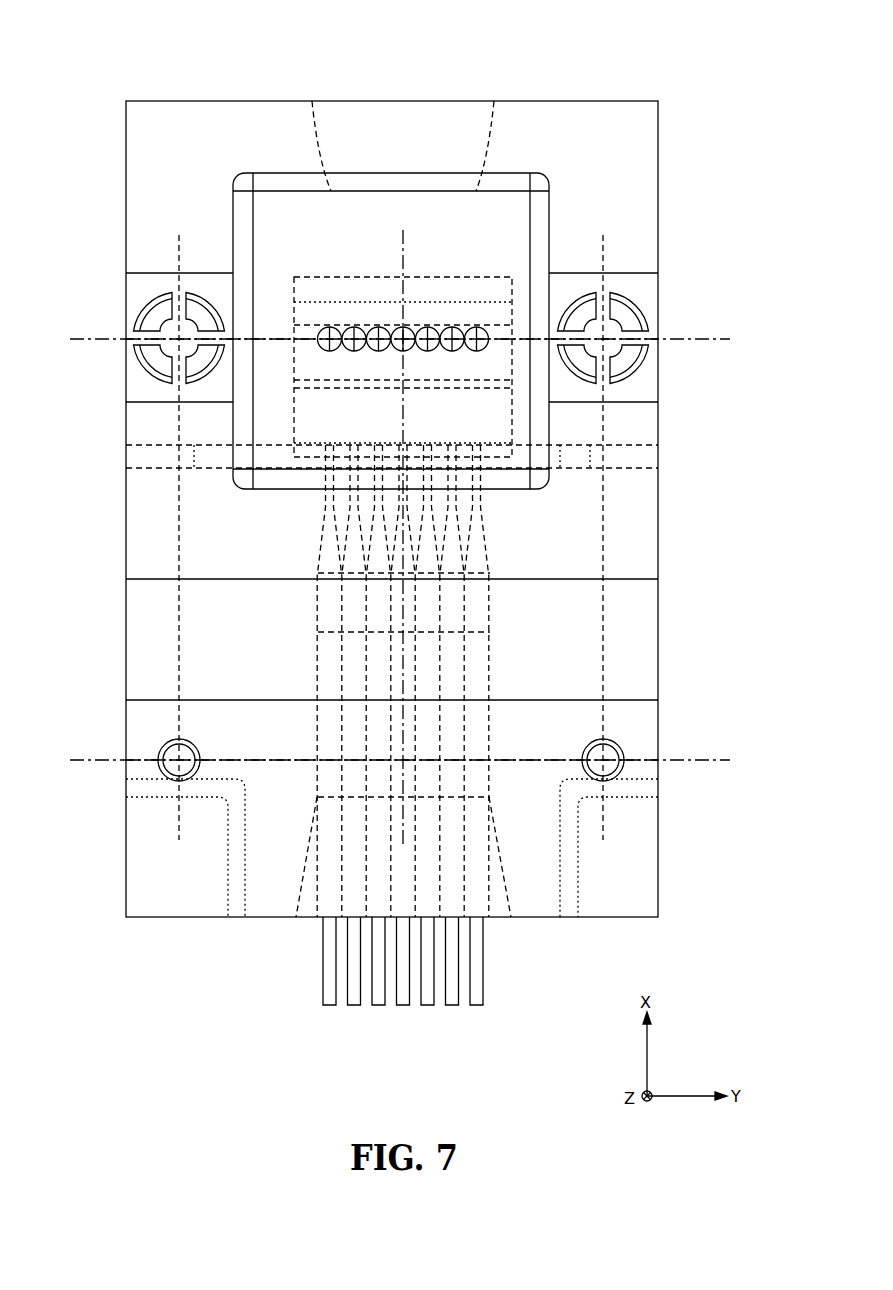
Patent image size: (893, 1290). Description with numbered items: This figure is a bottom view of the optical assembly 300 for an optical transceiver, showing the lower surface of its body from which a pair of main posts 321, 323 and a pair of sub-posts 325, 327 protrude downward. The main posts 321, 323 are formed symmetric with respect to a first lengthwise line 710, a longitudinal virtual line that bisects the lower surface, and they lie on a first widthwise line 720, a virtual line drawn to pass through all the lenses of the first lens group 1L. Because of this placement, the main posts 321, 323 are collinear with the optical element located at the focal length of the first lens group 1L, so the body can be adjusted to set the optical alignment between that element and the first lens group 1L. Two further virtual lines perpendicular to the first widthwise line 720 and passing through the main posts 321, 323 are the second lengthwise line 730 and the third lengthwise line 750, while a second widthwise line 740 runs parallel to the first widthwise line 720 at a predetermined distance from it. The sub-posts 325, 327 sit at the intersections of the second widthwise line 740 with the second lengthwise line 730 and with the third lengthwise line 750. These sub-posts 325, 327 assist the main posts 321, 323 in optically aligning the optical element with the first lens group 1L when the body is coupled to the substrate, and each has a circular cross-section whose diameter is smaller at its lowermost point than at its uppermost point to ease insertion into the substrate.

The optical assembly 300 is at (250, 48).
The first lens group 1L is at (322, 327).
The main post 321 is at (640, 307).
The main post 323 is at (150, 312).
The sub-post 325 is at (622, 768).
The sub-post 327 is at (150, 775).
The first lengthwise line 710 is at (403, 610).
The first widthwise line 720 is at (690, 342).
The second lengthwise line 730 is at (603, 528).
The second widthwise line 740 is at (677, 760).
The third lengthwise line 750 is at (179, 546).